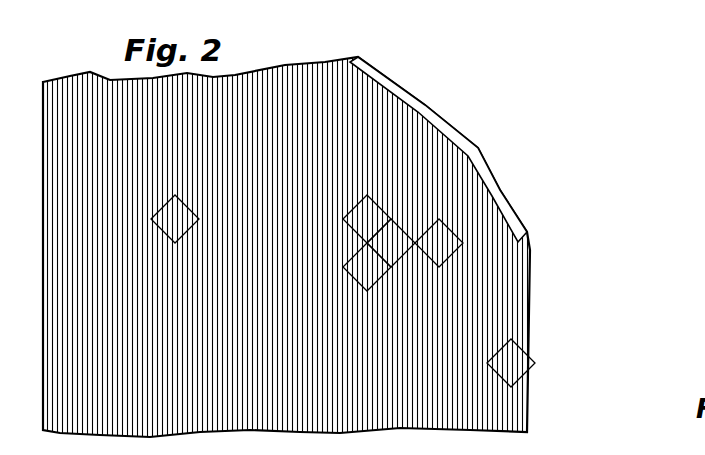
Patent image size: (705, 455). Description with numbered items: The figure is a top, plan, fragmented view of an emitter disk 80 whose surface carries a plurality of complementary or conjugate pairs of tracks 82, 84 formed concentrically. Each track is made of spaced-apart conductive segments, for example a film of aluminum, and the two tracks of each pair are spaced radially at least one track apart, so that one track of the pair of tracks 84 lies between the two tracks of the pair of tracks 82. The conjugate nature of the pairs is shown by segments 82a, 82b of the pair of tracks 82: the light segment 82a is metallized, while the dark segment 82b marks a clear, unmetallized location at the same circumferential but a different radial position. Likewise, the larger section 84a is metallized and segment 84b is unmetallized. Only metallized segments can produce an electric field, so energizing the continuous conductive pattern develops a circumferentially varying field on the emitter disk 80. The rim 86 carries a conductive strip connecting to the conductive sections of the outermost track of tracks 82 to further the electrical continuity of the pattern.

The emitter disk 80 is at (408, 84).
The pair of tracks 82 is at (490, 367).
The segment 82a is at (370, 228).
The segment 82b is at (398, 240).
The pair of tracks 84 is at (488, 338).
The section 84a is at (432, 236).
The segment 84b is at (362, 265).
The rim 86 is at (442, 110).